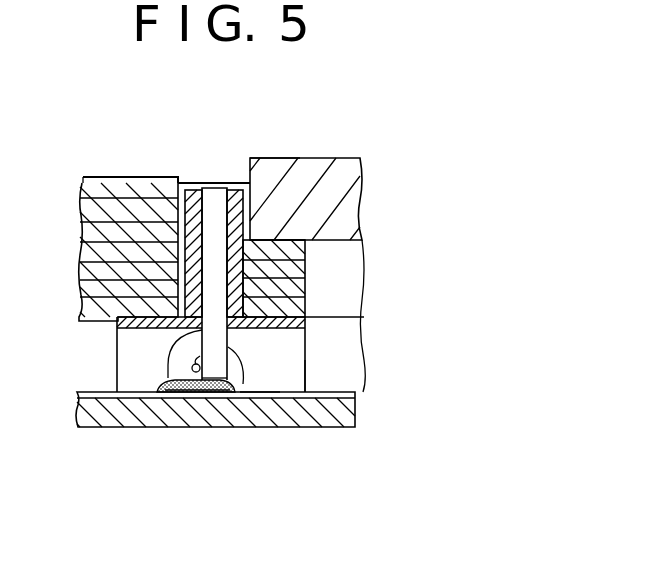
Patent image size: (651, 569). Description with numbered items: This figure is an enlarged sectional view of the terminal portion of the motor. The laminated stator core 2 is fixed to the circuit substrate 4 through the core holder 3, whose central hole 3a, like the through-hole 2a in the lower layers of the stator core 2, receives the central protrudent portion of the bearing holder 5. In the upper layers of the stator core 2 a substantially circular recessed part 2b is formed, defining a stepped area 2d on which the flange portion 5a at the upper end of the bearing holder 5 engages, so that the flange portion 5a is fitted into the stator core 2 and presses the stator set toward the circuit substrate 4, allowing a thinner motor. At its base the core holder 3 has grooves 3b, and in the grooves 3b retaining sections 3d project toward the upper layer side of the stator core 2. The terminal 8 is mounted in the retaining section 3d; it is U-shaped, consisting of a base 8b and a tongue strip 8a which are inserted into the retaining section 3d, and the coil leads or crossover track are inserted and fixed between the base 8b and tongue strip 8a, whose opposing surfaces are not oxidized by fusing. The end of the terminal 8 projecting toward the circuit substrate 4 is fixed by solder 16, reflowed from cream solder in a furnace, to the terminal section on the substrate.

The stator core 2 is at (103, 186).
The through-hole 2a is at (308, 286).
The recessed part 2b is at (240, 181).
The stepped area 2d is at (291, 237).
The core holder 3 is at (117, 345).
The hole 3a is at (311, 365).
The grooves 3b is at (258, 432).
The retaining sections 3d is at (188, 186).
The circuit substrate 4 is at (306, 428).
The bearing holder 5 is at (346, 158).
The flange portion 5a is at (271, 163).
The terminal 8 is at (214, 186).
The tongue strip 8a is at (186, 396).
The base 8b is at (232, 400).
The solder 16 is at (157, 388).